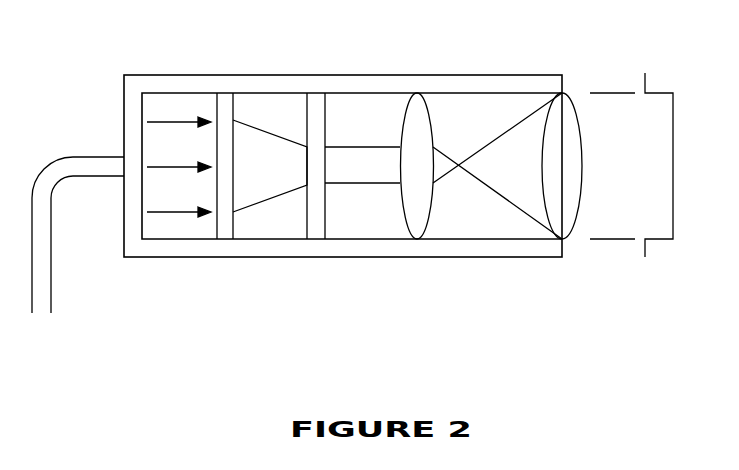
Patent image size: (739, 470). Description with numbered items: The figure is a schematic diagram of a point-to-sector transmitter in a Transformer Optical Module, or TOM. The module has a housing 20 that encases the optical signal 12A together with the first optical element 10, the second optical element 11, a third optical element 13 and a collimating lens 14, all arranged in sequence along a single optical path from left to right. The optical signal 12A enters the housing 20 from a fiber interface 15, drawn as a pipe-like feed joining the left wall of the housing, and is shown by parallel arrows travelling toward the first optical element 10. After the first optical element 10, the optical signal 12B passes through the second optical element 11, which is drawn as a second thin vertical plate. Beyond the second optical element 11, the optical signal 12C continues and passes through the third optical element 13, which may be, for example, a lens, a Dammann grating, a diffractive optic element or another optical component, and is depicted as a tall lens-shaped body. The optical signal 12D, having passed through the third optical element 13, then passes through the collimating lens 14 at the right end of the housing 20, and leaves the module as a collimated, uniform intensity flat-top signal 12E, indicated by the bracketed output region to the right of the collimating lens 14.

The housing 20 is at (138, 83).
The fiber interface 15 is at (88, 167).
The optical signal 12A is at (180, 230).
The first optical element 10 is at (223, 102).
The optical signal 12B is at (278, 107).
The second optical element 11 is at (317, 230).
The optical signal 12C is at (368, 107).
The third optical element 13 is at (415, 228).
The optical signal 12D is at (490, 107).
The collimating lens 14 is at (565, 228).
The collimated uniform intensity flat-top signal 12E is at (653, 83).